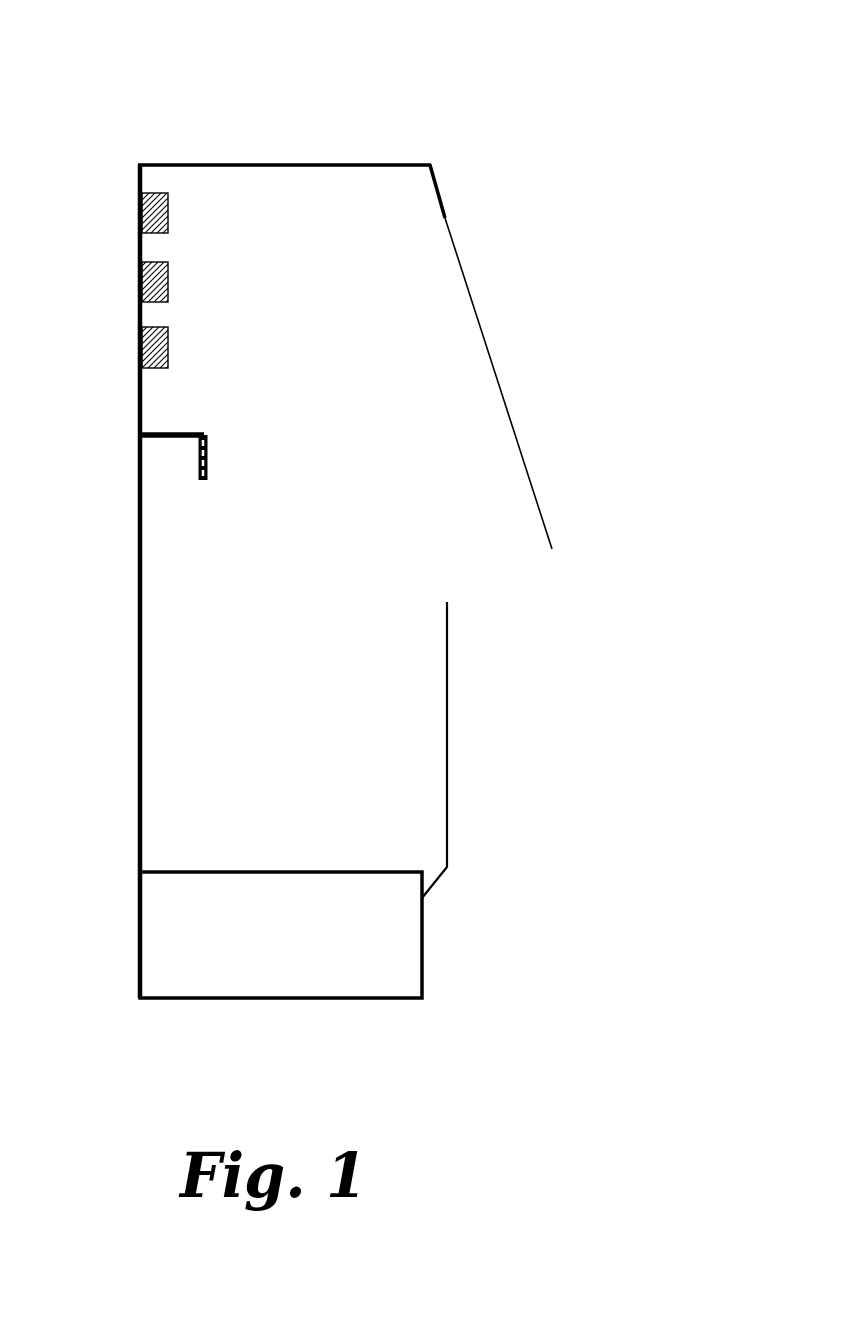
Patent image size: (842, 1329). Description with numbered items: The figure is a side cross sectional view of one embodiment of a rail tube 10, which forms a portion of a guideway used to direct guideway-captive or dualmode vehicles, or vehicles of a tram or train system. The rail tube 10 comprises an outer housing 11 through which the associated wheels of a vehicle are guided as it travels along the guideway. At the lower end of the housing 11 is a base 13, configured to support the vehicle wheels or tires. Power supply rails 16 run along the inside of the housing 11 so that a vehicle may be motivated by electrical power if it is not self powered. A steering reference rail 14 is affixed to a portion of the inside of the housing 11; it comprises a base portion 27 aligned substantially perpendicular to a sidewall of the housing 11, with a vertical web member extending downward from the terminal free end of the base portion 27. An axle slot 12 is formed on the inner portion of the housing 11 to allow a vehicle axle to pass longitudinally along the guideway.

The rail tube 10 is at (370, 140).
The outer housing 11 is at (138, 613).
The axle slot 12 is at (503, 584).
The base 13 is at (258, 869).
The steering reference rail 14 is at (183, 495).
The power supply rails 16 is at (183, 278).
The base portion 27 is at (182, 432).